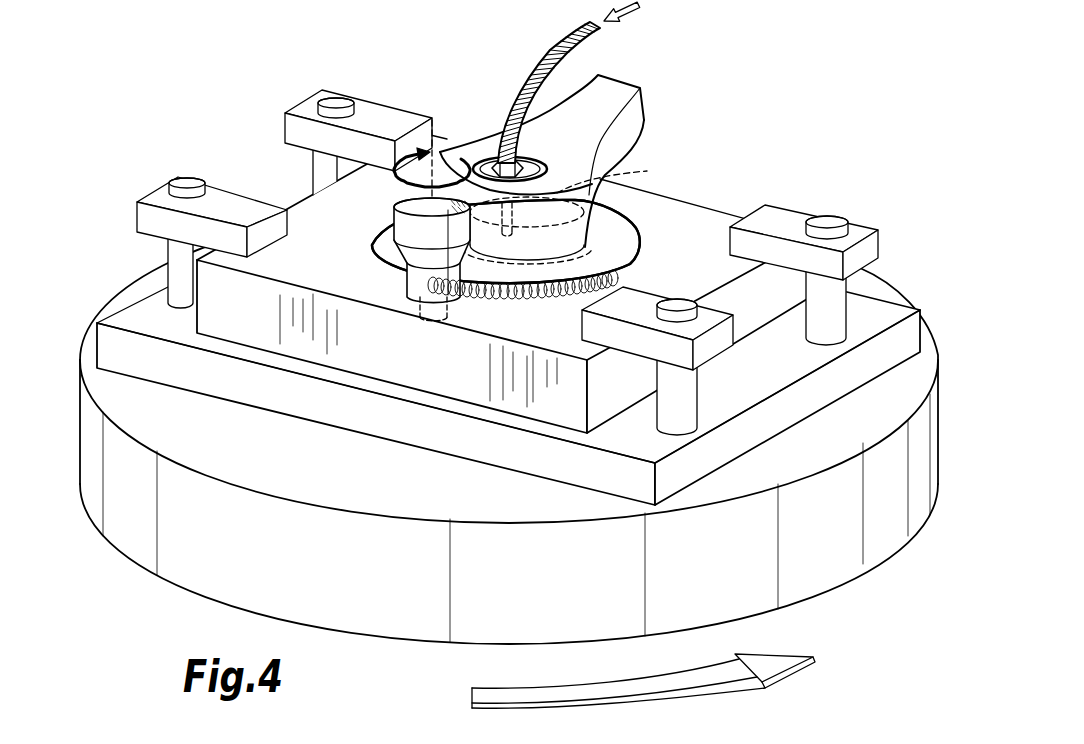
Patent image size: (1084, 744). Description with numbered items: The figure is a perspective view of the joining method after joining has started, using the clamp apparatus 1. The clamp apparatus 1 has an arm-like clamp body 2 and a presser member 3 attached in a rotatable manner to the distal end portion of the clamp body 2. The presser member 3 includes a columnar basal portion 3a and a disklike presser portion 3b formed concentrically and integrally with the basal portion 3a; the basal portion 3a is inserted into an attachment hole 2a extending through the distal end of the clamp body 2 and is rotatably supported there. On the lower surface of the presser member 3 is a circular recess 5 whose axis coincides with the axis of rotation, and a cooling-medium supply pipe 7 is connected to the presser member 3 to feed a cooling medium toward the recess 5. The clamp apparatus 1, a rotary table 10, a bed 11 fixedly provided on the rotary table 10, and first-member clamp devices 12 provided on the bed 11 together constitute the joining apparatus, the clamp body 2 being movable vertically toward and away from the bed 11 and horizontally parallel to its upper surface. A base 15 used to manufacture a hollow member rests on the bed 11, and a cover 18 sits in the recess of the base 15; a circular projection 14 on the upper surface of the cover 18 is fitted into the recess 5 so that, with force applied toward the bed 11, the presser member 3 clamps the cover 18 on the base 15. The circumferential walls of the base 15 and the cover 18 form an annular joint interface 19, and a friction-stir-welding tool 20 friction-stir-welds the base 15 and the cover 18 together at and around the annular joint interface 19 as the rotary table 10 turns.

The clamp apparatus 1 is at (632, 77).
The clamp body 2 is at (638, 115).
The attachment hole 2a is at (545, 163).
The presser member 3 is at (651, 235).
The basal portion 3a is at (488, 158).
The presser portion 3b is at (564, 274).
The recess 5 is at (647, 171).
The cooling-medium supply pipe 7 is at (532, 65).
The rotary table 10 is at (808, 568).
The bed 11 is at (365, 421).
The first-member clamp devices 12 is at (285, 125).
The projection 14 is at (605, 212).
The base 15 is at (298, 193).
The cover 18 is at (396, 208).
The annular joint interface 19 is at (372, 243).
The friction-stir-welding tool 20 is at (400, 292).